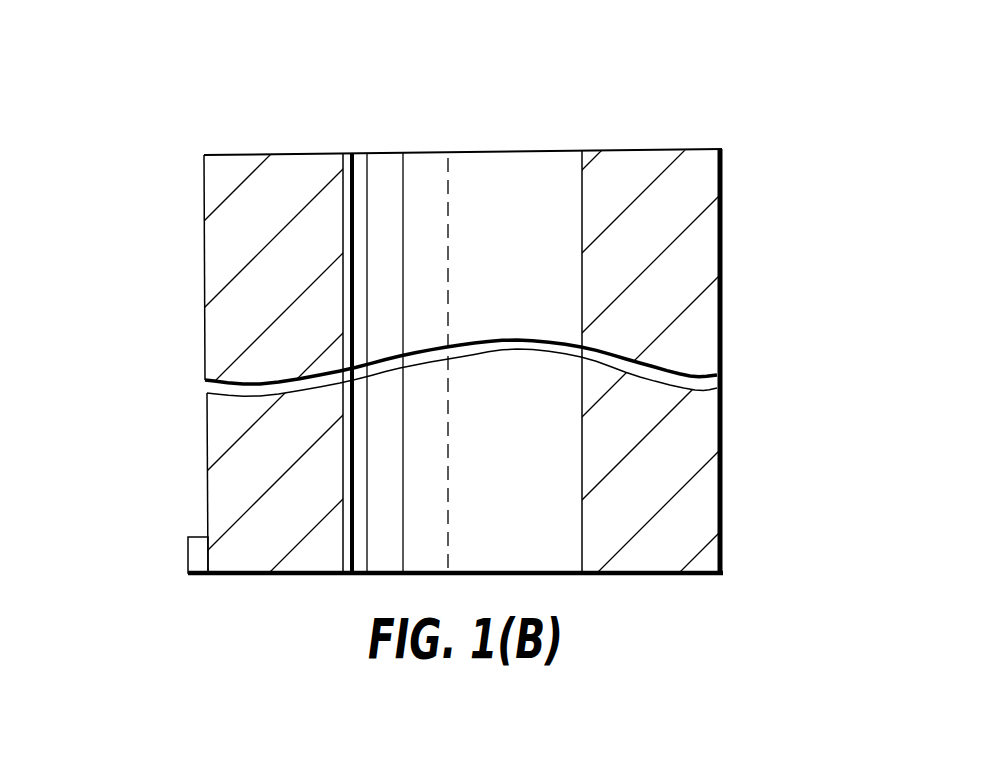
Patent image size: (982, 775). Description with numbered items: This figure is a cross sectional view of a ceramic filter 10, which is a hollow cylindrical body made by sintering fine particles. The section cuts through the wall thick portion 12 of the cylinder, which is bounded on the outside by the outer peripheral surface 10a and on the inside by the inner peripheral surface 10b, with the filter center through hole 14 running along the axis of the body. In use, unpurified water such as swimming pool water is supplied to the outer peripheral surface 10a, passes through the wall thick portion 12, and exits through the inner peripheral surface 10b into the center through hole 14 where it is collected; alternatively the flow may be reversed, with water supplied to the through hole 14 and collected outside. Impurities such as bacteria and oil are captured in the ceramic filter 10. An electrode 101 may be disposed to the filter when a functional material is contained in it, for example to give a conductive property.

The ceramic filter 10 is at (707, 137).
The outer peripheral surface 10a is at (721, 203).
The inner peripheral surface 10b is at (581, 248).
The wall thick portion 12 is at (640, 152).
The filter center through hole 14 is at (478, 158).
The electrode 101 is at (187, 555).